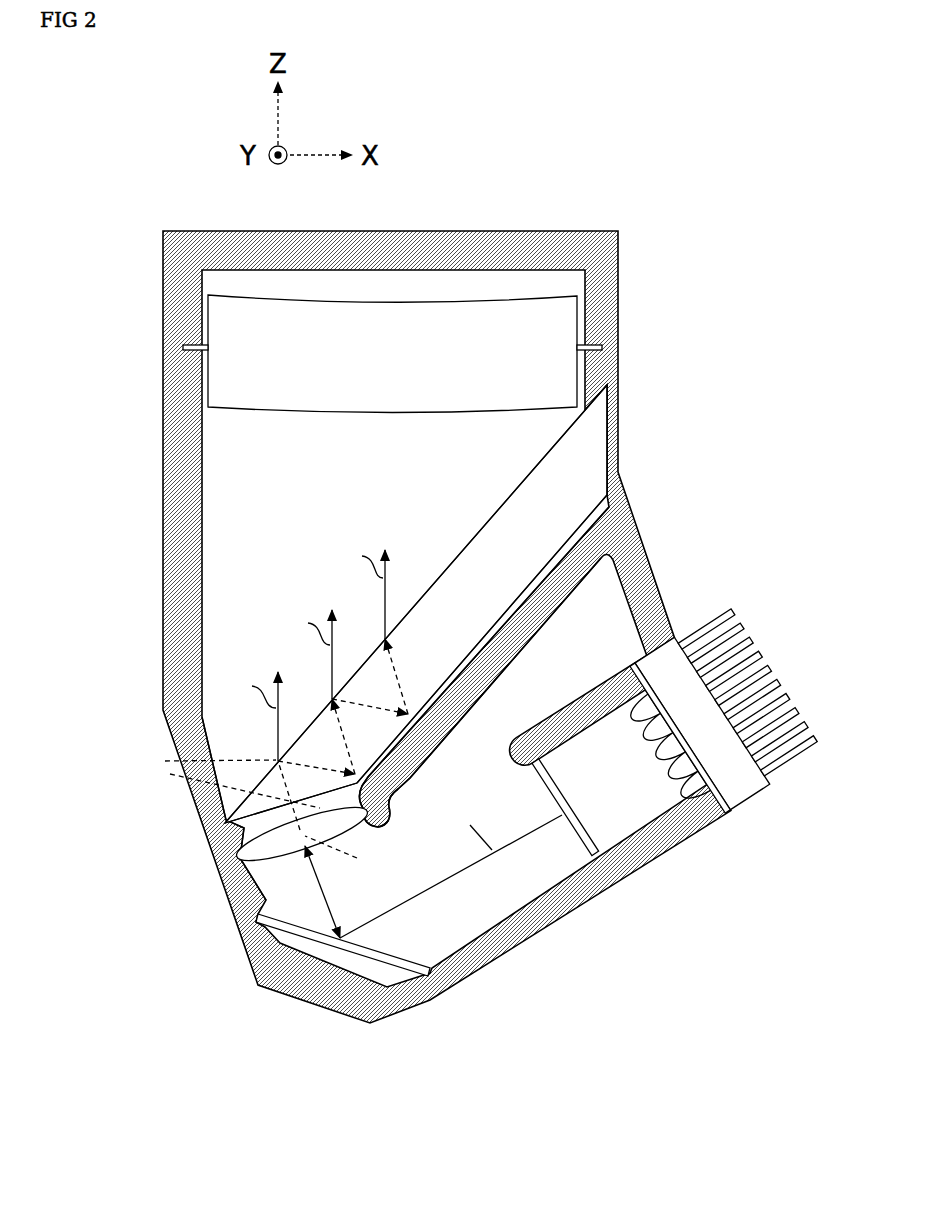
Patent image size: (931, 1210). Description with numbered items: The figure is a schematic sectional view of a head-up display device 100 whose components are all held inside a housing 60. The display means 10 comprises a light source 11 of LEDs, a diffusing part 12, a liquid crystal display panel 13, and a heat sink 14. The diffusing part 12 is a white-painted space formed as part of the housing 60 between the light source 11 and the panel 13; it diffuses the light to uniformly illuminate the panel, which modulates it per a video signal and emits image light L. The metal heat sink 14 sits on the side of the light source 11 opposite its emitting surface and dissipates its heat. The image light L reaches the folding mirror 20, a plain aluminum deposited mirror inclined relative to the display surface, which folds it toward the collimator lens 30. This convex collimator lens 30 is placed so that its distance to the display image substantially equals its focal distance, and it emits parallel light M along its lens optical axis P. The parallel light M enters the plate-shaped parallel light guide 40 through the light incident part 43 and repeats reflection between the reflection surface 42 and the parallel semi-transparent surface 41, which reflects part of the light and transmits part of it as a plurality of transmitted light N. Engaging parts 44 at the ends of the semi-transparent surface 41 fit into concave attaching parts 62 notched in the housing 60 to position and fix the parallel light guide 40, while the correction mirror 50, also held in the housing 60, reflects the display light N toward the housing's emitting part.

The light source device 100 is at (156, 165).
The housing 60 is at (164, 440).
The attaching part 62 is at (612, 405).
The correction mirror 50 is at (552, 377).
The parallel light guide 40 is at (413, 640).
The semi-transparent surface 41 is at (580, 418).
The reflection surface 42 is at (565, 530).
The light incident part 43 is at (270, 808).
The engaging part 44 is at (608, 447).
The collimator lens 30 is at (262, 868).
The folding mirror 20 is at (432, 976).
The display means 10 is at (670, 794).
The light source 11 is at (702, 723).
The diffusing part 12 is at (680, 738).
The liquid crystal display panel 13 is at (565, 807).
The heat sink 14 is at (747, 692).